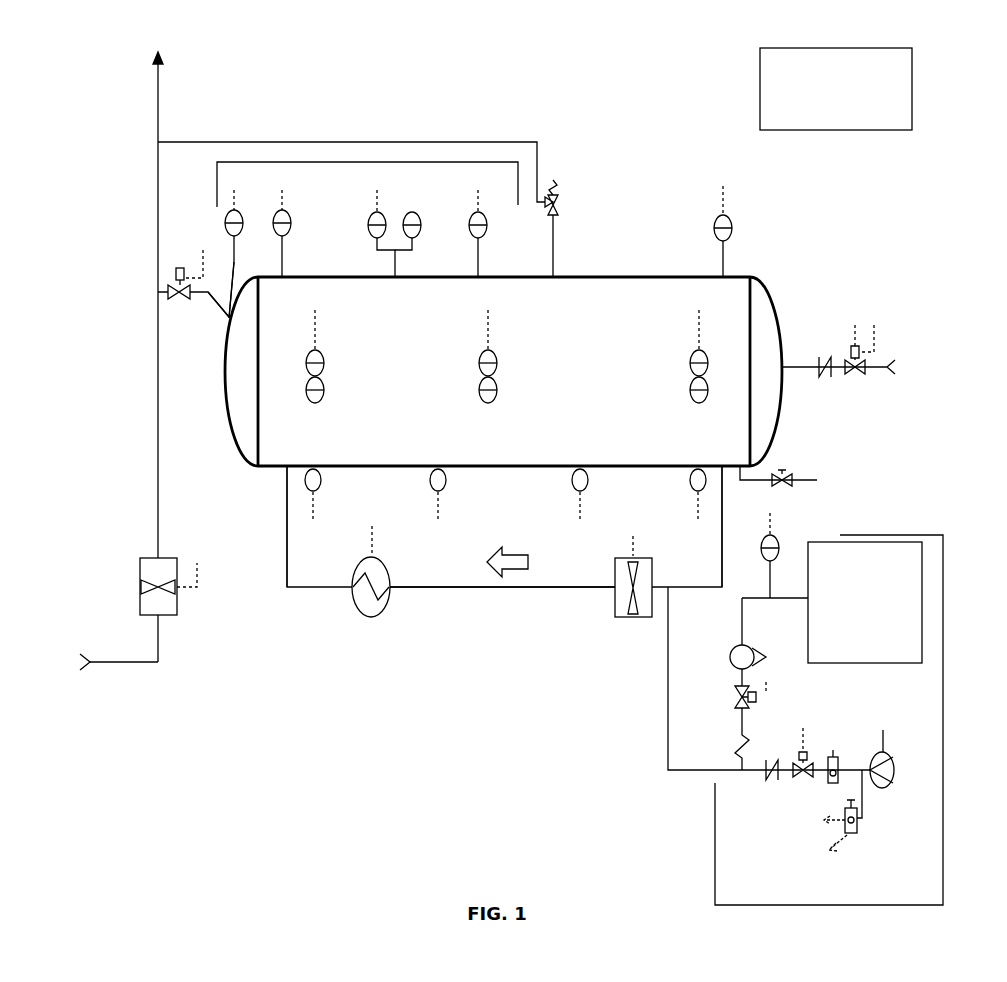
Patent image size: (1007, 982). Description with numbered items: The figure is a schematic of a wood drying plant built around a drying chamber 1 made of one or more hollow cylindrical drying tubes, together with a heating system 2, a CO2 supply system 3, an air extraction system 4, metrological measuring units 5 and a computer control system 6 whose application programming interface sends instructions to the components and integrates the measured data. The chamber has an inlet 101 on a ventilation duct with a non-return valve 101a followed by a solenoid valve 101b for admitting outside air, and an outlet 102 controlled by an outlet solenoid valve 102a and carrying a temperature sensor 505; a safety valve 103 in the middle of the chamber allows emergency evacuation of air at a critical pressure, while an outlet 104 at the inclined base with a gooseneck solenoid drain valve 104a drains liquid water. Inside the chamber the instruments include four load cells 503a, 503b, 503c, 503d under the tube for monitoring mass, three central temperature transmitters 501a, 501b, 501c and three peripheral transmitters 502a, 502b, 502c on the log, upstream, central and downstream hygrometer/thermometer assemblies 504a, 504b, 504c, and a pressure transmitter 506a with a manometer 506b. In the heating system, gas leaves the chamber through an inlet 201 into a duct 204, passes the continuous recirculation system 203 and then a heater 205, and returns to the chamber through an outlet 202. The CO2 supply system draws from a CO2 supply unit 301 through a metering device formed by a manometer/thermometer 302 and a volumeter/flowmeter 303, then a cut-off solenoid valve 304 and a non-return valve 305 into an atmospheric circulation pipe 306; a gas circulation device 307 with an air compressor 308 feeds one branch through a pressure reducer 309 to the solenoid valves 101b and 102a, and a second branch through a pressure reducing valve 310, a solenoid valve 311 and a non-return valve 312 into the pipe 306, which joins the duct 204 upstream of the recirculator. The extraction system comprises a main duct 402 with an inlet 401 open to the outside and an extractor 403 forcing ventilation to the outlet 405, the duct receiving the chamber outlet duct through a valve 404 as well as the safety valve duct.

The drying chamber 1 is at (648, 292).
The heating system 2 is at (403, 622).
The CO2 supply system 3 is at (943, 700).
The air extraction system 4 is at (150, 505).
The metrological measuring units 5 is at (374, 163).
The computer control system 6 is at (845, 47).
The inlet 101 is at (785, 356).
The non-return valve 101a is at (830, 378).
The solenoid valve 101b is at (860, 376).
The outlet 102 is at (230, 321).
The outlet solenoid valve 102a is at (180, 268).
The safety valve 103 is at (560, 203).
The outlet 104 is at (744, 478).
The solenoid drain valve 104a is at (793, 487).
The inlet 201 is at (727, 478).
The outlet 202 is at (285, 470).
The continuous recirculation system 203 is at (612, 598).
The duct 204 is at (467, 587).
The heater 205 is at (352, 597).
The CO2 supply unit 301 is at (865, 602).
The manometer/thermometer 302 is at (780, 541).
The volumeter/flowmeter 303 is at (730, 660).
The cut-off solenoid valve 304 is at (734, 695).
The filter 305 is at (734, 746).
The atmospheric circulation pipe 306 is at (668, 745).
The gas circulation device 307 is at (890, 812).
The air compressor 308 is at (893, 760).
The pressure reducer 309 is at (853, 836).
The pressure reducing valve 310 is at (838, 752).
The solenoid valve 311 is at (809, 745).
The non-return valve 312 is at (770, 782).
The inlet 401 is at (92, 672).
The main duct 402 is at (162, 665).
The extractor 403 is at (178, 597).
The inlet valve 404 is at (157, 292).
The outlet 405 is at (156, 54).
The temperature transmitter 501a is at (325, 391).
The temperature transmitter 501b is at (498, 391).
The temperature transmitter 501c is at (689, 391).
The temperature transmitter 502a is at (325, 363).
The temperature transmitter 502b is at (498, 363).
The temperature transmitter 502c is at (689, 363).
The load cell 503a is at (322, 482).
The load cell 503b is at (447, 482).
The load cell 503c is at (589, 482).
The load cell 503d is at (689, 488).
The hygrometer/thermometer assembly 504a is at (291, 232).
The hygrometer/thermometer assembly 504b is at (488, 227).
The hygrometer/thermometer assembly 504c is at (733, 223).
The temperature sensor 505 is at (243, 216).
The pressure transmitter 506a is at (368, 219).
The manometer 506b is at (416, 217).